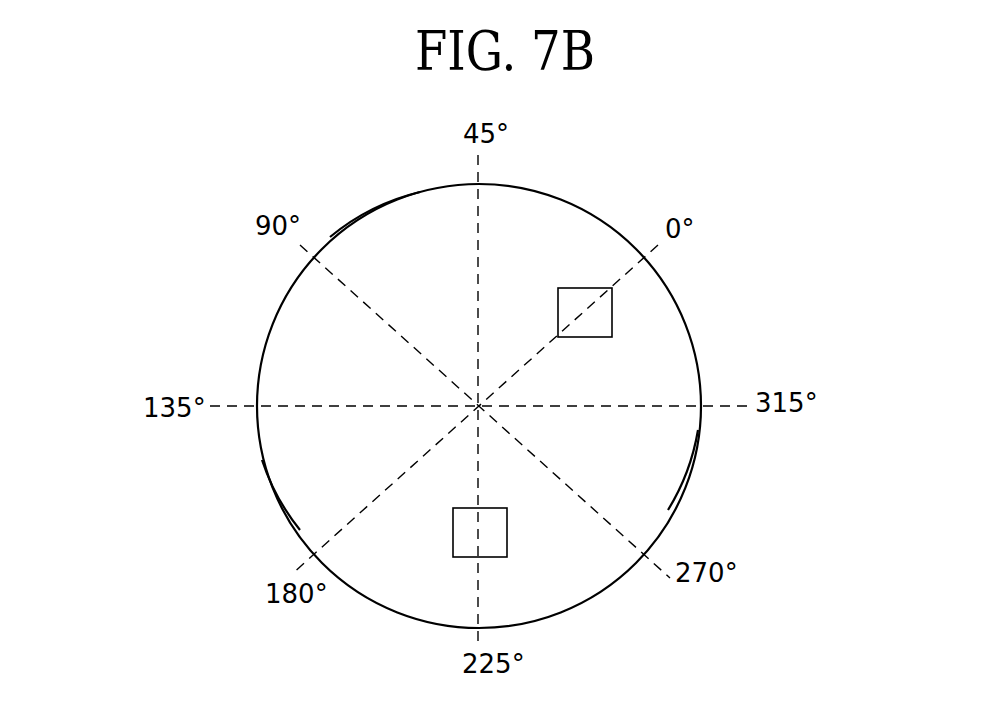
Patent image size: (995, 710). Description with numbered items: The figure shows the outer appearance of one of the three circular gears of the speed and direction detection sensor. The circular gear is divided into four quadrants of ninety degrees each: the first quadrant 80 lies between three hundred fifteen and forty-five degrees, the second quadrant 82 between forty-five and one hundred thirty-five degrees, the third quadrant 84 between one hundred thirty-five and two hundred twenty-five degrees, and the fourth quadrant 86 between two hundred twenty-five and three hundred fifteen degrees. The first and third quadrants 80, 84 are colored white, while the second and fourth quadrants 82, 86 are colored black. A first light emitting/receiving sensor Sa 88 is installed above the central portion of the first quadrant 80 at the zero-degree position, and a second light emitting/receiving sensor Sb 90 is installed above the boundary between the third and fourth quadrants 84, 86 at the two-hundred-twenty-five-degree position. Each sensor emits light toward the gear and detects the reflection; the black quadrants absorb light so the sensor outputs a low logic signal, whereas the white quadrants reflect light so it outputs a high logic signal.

The first quadrant 80 is at (548, 250).
The second quadrant 82 is at (382, 277).
The third quadrant 84 is at (297, 472).
The fourth quadrant 86 is at (673, 452).
The first light emitting/receiving sensor Sa 88 is at (593, 322).
The second light emitting/receiving sensor Sb 90 is at (465, 542).